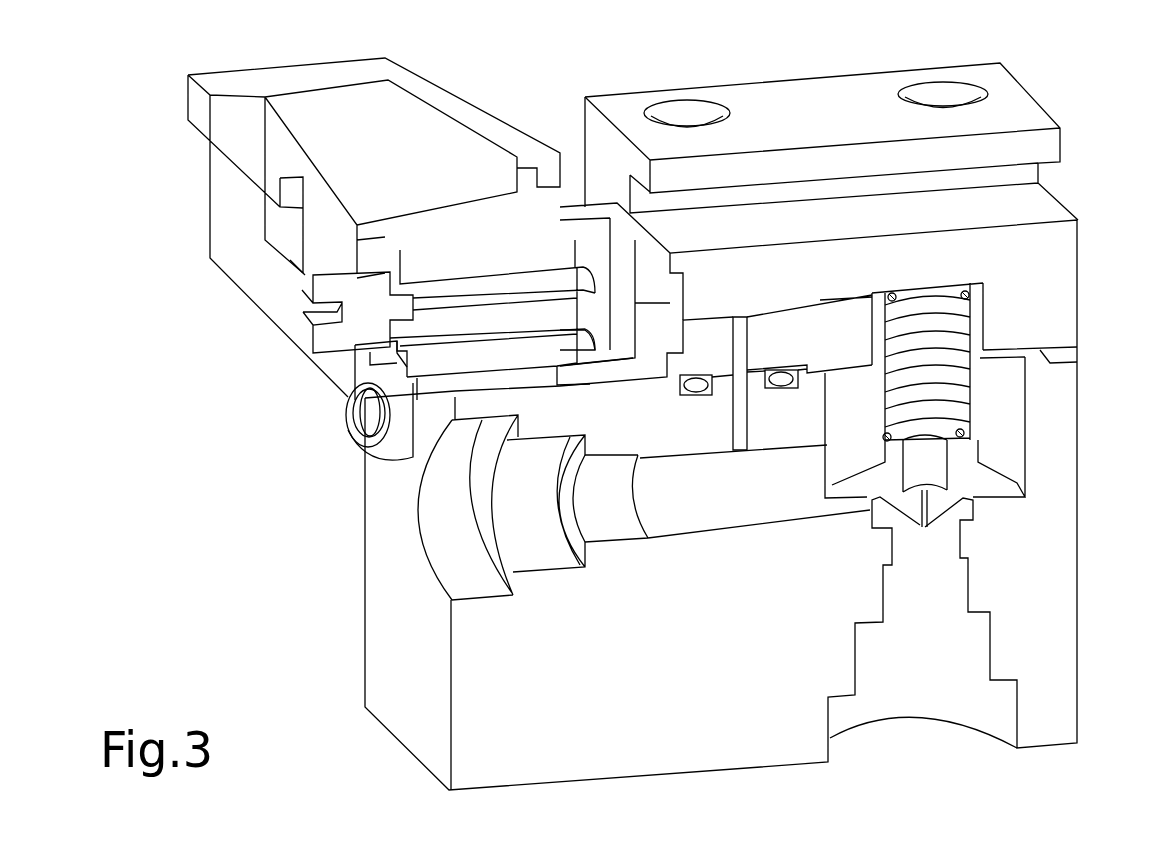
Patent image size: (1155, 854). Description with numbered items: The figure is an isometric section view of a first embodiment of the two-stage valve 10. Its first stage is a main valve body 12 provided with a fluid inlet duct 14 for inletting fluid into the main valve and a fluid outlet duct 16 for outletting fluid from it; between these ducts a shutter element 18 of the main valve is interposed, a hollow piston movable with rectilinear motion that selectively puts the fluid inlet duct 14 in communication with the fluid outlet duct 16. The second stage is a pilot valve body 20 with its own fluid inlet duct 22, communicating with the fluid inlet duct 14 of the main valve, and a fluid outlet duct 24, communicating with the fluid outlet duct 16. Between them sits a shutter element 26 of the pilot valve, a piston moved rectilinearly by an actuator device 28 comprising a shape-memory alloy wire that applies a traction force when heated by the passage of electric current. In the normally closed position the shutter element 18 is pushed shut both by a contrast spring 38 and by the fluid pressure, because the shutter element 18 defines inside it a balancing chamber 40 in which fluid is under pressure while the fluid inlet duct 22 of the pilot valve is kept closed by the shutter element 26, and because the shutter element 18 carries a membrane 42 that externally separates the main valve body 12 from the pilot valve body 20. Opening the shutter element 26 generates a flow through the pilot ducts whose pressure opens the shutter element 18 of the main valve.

The two-stage valve 10 is at (311, 461).
The main valve body 12 is at (1050, 665).
The fluid inlet duct 14 is at (907, 708).
The fluid outlet duct 16 is at (443, 538).
The shutter element 18 is at (973, 452).
The pilot valve body 20 is at (1053, 273).
The fluid inlet duct 22 is at (840, 293).
The fluid outlet duct 24 is at (747, 337).
The shutter element 26 is at (703, 307).
The actuator device 28 is at (497, 257).
The contrast spring 38 is at (987, 332).
The balancing chamber 40 is at (928, 467).
The membrane 42 is at (1077, 362).